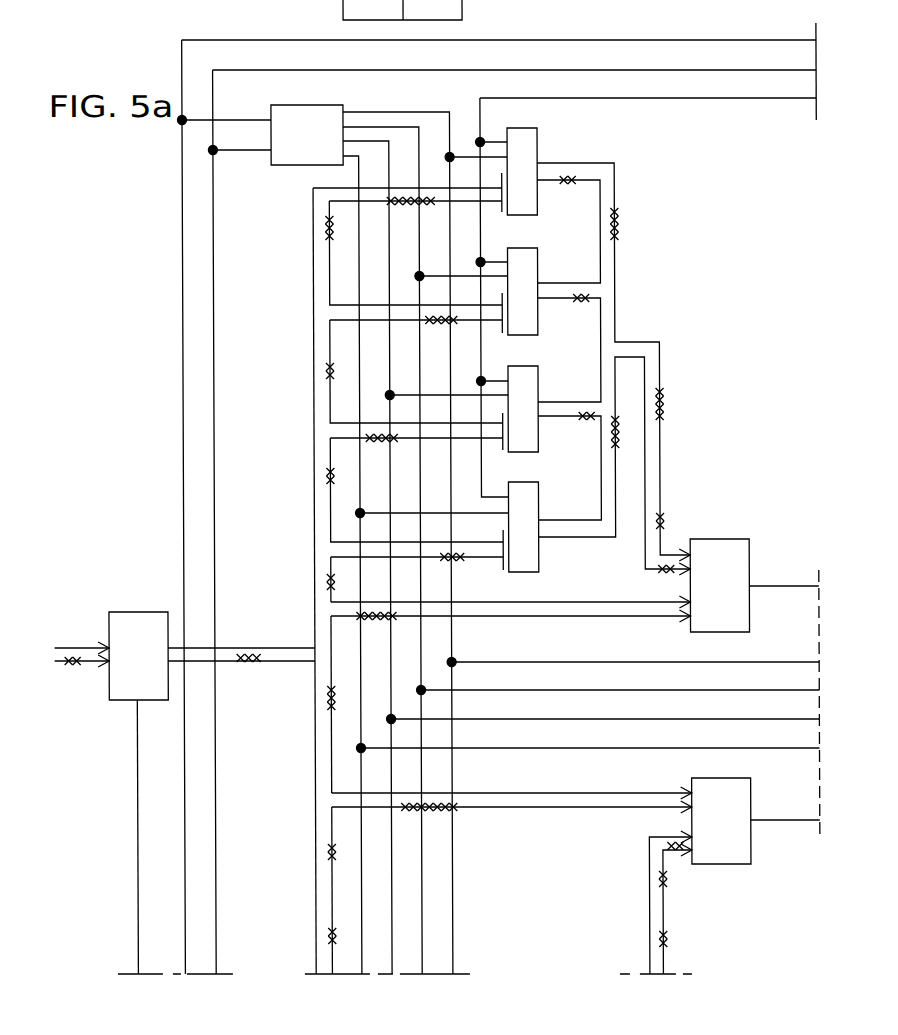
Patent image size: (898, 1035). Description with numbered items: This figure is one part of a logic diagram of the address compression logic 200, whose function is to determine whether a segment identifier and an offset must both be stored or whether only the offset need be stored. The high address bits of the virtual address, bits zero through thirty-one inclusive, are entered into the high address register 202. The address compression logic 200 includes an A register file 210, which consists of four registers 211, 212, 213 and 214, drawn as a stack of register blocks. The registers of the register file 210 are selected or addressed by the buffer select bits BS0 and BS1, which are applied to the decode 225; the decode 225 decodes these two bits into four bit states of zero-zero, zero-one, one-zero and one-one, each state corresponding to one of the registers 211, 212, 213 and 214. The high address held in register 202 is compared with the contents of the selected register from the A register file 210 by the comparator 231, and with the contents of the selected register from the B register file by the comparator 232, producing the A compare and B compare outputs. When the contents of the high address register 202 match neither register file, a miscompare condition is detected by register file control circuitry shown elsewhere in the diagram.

The address compression logic 200 is at (139, 51).
The high address register 202 is at (142, 610).
The A register file 210 is at (622, 151).
The register 211 is at (537, 201).
The register 212 is at (537, 261).
The register 213 is at (537, 373).
The register 214 is at (537, 490).
The decode 225 is at (303, 104).
The comparator 231 is at (723, 538).
The comparator 232 is at (727, 864).